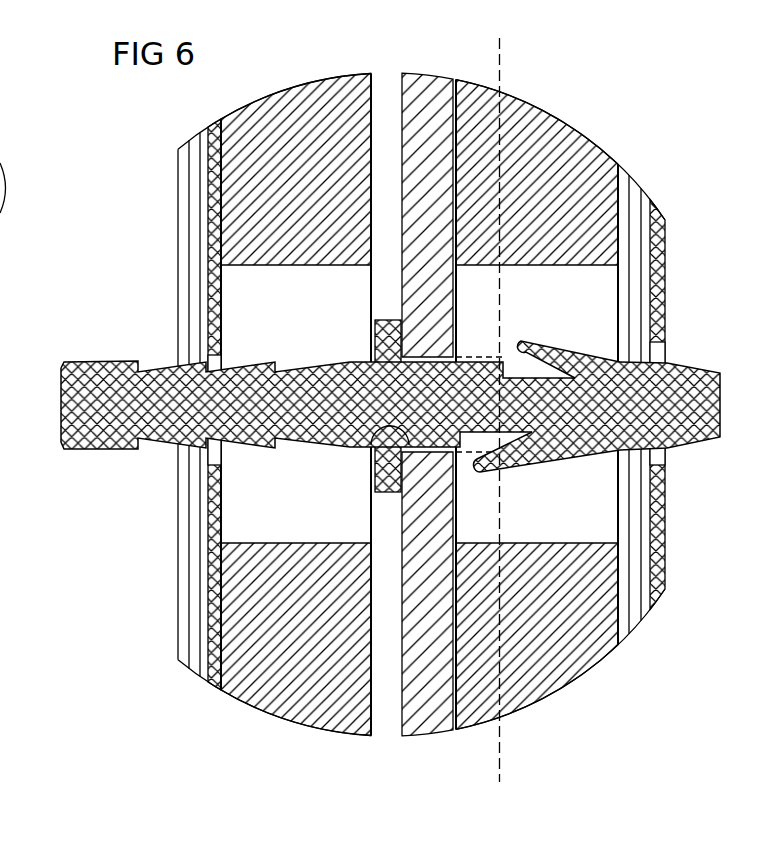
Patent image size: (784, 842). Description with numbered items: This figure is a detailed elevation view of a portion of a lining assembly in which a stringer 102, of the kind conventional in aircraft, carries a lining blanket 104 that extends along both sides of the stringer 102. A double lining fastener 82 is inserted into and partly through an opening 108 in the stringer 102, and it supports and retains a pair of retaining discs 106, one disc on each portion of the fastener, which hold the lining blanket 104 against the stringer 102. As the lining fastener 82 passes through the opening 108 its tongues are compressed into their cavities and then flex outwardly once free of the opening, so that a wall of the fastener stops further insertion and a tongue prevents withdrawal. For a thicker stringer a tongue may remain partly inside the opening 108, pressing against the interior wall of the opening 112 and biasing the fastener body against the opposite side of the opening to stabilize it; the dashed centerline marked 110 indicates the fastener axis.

The lining fastener 82 is at (115, 362).
The stringer 102 is at (420, 80).
The lining blanket 104 is at (322, 80).
The retaining discs 106 is at (208, 225).
The opening 108 is at (373, 440).
The longitudinal axis 110 is at (500, 70).
The interior wall of the opening 112 is at (468, 352).